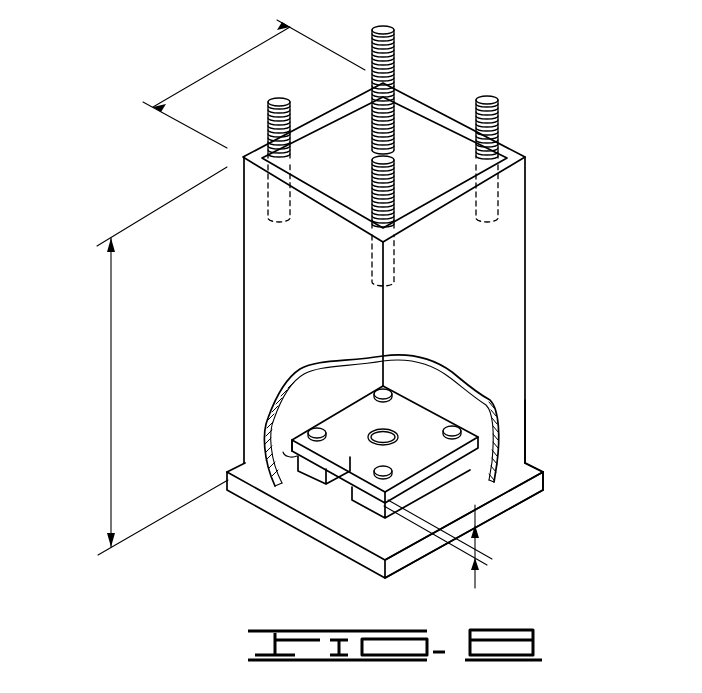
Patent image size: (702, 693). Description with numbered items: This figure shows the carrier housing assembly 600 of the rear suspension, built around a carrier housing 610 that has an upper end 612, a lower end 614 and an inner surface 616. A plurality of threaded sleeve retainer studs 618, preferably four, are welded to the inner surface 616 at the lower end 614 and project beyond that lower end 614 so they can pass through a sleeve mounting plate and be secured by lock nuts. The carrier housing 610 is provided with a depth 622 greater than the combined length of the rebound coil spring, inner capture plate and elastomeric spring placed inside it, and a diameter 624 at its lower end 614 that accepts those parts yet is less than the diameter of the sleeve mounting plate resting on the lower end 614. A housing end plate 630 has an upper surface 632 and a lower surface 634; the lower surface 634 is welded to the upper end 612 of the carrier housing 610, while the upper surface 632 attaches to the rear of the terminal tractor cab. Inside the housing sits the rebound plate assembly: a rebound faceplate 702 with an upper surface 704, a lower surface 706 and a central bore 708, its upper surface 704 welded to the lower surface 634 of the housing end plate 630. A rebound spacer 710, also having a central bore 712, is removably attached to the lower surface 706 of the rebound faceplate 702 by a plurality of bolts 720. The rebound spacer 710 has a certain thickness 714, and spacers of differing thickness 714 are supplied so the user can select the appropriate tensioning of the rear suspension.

The carrier housing assembly 600 is at (522, 158).
The carrier housing 610 is at (525, 257).
The upper end 612 is at (527, 450).
The lower end 614 is at (243, 158).
The inner surface 616 is at (410, 120).
The threaded sleeve retainer studs 618 is at (488, 102).
The depth 622 is at (110, 336).
The diameter 624 is at (215, 70).
The housing end plate 630 is at (543, 477).
The upper surface 632 is at (503, 512).
The lower surface 634 is at (483, 487).
The rebound faceplate 702 is at (433, 489).
The upper surface 704 is at (307, 475).
The lower surface 706 is at (377, 508).
The central bore 708 is at (403, 431).
The rebound spacer 710 is at (284, 452).
The central bore 712 is at (384, 430).
The thickness 714 is at (476, 578).
The bolts 720 is at (310, 428).